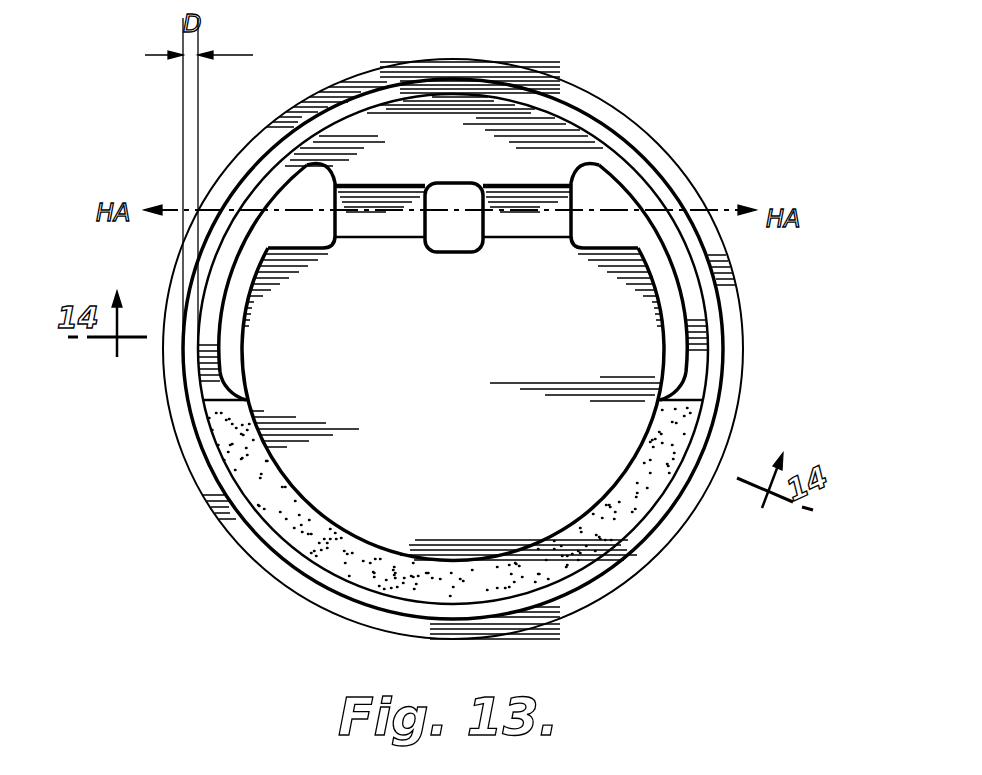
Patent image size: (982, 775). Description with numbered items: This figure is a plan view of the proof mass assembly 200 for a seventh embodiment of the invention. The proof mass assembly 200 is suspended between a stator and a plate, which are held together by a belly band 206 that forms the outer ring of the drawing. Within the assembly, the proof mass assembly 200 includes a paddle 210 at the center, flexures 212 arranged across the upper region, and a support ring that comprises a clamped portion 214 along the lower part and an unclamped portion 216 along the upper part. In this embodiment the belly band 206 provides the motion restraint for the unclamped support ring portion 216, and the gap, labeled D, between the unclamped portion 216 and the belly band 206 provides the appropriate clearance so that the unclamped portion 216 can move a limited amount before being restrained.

The proof mass assembly 200 is at (268, 538).
The belly band 206 is at (735, 352).
The paddle 210 is at (456, 410).
The flexures 212 is at (370, 197).
The clamped portion 214 is at (655, 506).
The unclamped portion 216 is at (638, 187).